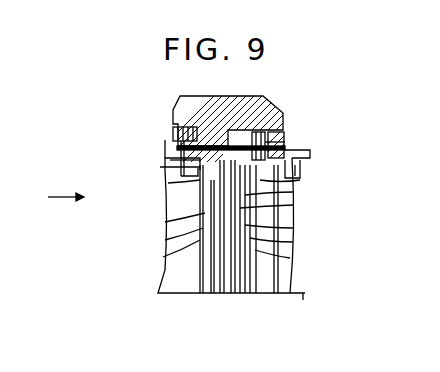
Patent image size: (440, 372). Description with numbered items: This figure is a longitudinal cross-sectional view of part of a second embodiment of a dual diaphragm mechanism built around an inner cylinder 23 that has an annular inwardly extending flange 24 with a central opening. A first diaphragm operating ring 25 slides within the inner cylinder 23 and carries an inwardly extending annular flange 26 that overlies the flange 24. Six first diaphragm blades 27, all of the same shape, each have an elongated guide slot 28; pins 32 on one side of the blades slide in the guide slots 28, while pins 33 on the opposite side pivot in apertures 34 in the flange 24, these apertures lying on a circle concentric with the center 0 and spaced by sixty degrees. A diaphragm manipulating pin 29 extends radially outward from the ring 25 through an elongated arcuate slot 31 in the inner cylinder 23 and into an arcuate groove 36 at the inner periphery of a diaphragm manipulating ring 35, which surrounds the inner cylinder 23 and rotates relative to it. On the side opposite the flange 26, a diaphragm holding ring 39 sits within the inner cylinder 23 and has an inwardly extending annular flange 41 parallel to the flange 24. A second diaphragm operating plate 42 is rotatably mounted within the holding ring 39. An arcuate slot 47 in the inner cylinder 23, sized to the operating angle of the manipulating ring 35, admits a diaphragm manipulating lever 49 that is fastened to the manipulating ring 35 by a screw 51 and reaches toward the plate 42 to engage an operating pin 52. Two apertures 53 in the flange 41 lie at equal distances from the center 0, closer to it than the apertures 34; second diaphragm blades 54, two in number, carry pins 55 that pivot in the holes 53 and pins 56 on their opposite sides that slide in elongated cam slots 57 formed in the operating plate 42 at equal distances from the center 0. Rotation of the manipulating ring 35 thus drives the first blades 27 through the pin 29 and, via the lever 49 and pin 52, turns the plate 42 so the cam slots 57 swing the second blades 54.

The center 0 is at (303, 300).
The inner cylinder 23 is at (293, 152).
The annular inwardly extending flange 24 is at (303, 287).
The first diaphragm operating ring 25 is at (297, 167).
The inwardly extending annular flange 26 is at (293, 183).
The first diaphragm blades 27 is at (293, 192).
The elongated guide slot 28 is at (293, 205).
The diaphragm manipulating pin 29 is at (283, 140).
The elongated arcuate slot 31 is at (265, 150).
The pins 32 is at (293, 228).
The pins 33 is at (293, 242).
The apertures 34 is at (290, 258).
The diaphragm manipulating ring 35 is at (270, 98).
The arcuate groove 36 is at (282, 136).
The diaphragm holding ring 39 is at (177, 148).
The inwardly extending annular flange 41 is at (212, 233).
The second diaphragm operating plate 42 is at (203, 190).
The arcuate slot 47 is at (165, 140).
The diaphragm manipulating lever 49 is at (160, 126).
The screw 51 is at (176, 124).
The operating pin 52 is at (170, 160).
The apertures 53 is at (165, 240).
The second diaphragm blades 54 is at (163, 257).
The pins 55 is at (165, 222).
The pins 56 is at (160, 168).
The elongated cam slots 57 is at (168, 183).